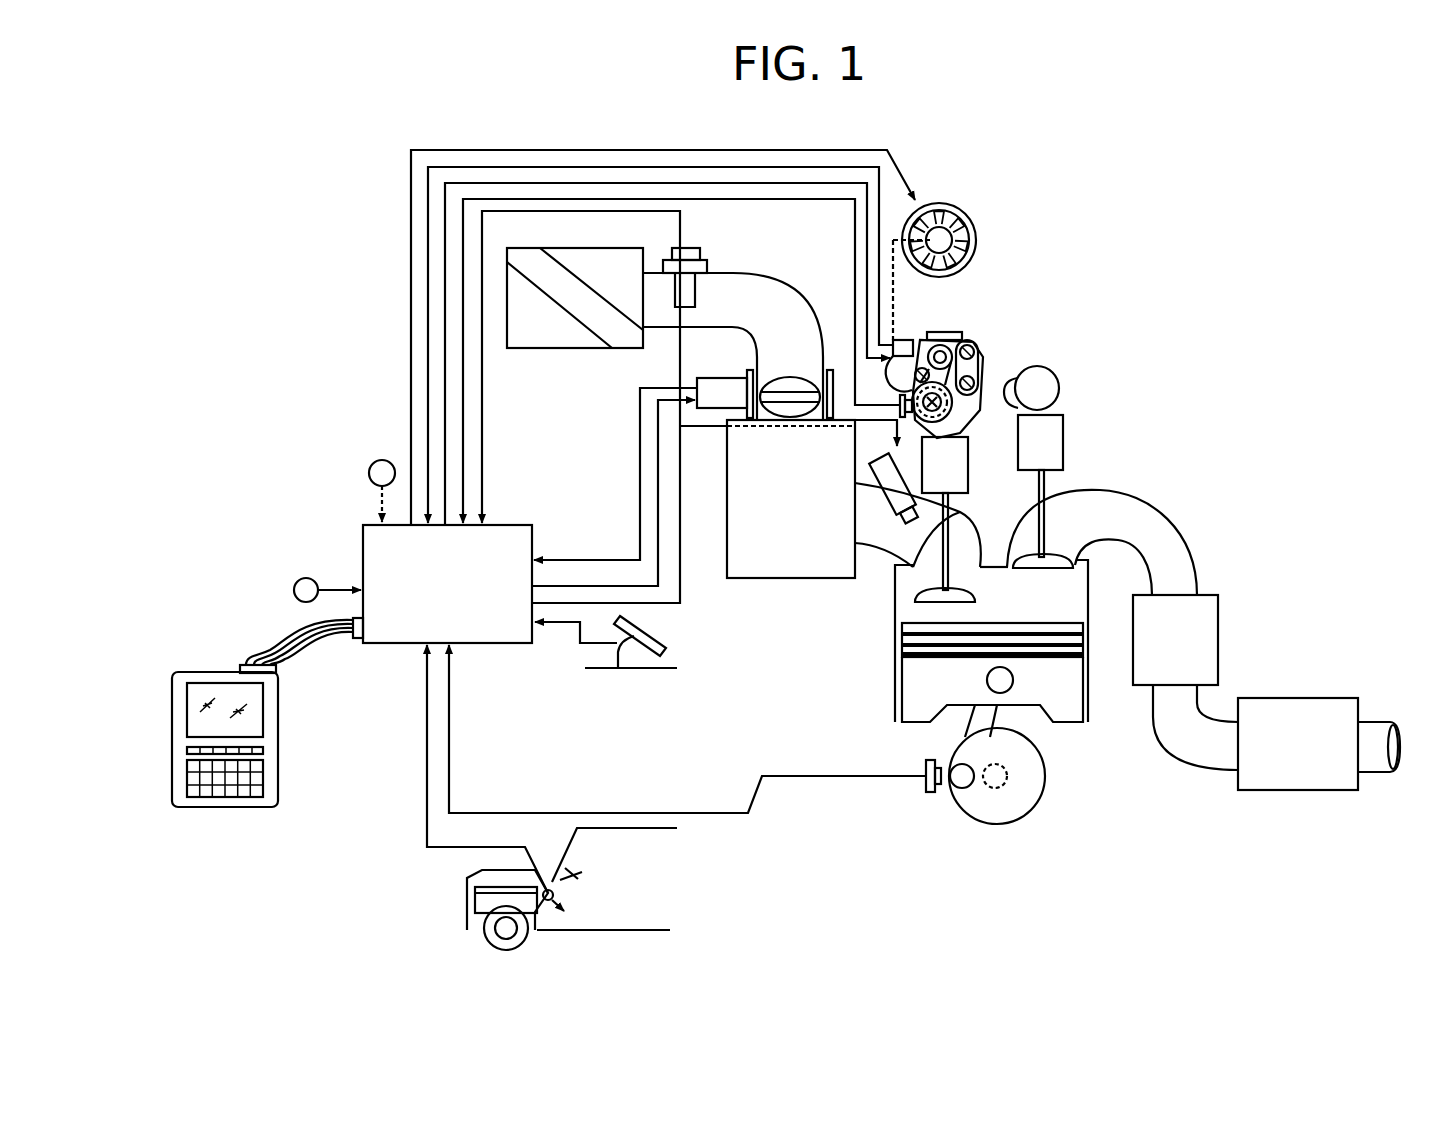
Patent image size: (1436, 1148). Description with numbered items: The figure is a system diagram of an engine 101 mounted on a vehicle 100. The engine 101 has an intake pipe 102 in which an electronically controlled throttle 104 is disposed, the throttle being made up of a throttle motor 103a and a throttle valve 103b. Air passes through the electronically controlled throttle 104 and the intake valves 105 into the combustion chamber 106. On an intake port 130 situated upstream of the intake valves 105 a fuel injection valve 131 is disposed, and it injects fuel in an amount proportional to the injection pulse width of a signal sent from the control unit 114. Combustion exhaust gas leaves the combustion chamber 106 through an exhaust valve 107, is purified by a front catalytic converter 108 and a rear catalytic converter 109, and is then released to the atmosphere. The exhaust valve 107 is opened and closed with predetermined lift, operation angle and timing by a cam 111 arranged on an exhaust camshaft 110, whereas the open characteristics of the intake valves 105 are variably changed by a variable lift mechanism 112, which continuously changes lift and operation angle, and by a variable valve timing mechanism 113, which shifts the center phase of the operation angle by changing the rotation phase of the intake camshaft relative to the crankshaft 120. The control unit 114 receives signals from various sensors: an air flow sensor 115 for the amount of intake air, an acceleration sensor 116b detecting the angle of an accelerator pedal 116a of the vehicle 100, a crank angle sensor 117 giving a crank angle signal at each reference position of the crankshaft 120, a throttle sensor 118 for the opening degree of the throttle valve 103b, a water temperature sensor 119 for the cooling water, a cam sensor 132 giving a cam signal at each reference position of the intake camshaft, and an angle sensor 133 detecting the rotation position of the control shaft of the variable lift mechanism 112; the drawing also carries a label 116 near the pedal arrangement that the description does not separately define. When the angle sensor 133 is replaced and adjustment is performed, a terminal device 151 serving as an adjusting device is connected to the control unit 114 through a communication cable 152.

The vehicle 100 is at (613, 932).
The engine 101 is at (884, 672).
The intake pipe 102 is at (748, 288).
The throttle motor 103a is at (731, 388).
The throttle valve 103b is at (787, 388).
The electronically controlled throttle 104 is at (640, 372).
The intake valves 105 is at (943, 573).
The combustion chamber 106 is at (1070, 597).
The exhaust valve 107 is at (1043, 483).
The front catalytic converter 108 is at (1220, 601).
The rear catalytic converter 109 is at (1318, 698).
The exhaust camshaft 110 is at (1052, 385).
The cam 111 is at (1020, 365).
The variable lift mechanism 112 is at (960, 333).
The variable valve timing mechanism 113 is at (972, 214).
The control unit 114 is at (402, 644).
The air flow sensor 115 is at (683, 247).
The accelerator pedal sensor 116 is at (585, 668).
The accelerator pedal 116a is at (563, 918).
The acceleration sensor 116b is at (546, 888).
The crank angle sensor 117 is at (925, 785).
The throttle sensor 118 is at (830, 370).
The water temperature sensor 119 is at (372, 462).
The crankshaft 120 is at (1010, 768).
The intake port 130 is at (908, 563).
The fuel injection valve 131 is at (900, 505).
The cam sensor 132 is at (905, 348).
The angle sensor 133 is at (298, 578).
The terminal device 151 is at (278, 717).
The communication cable 152 is at (253, 637).